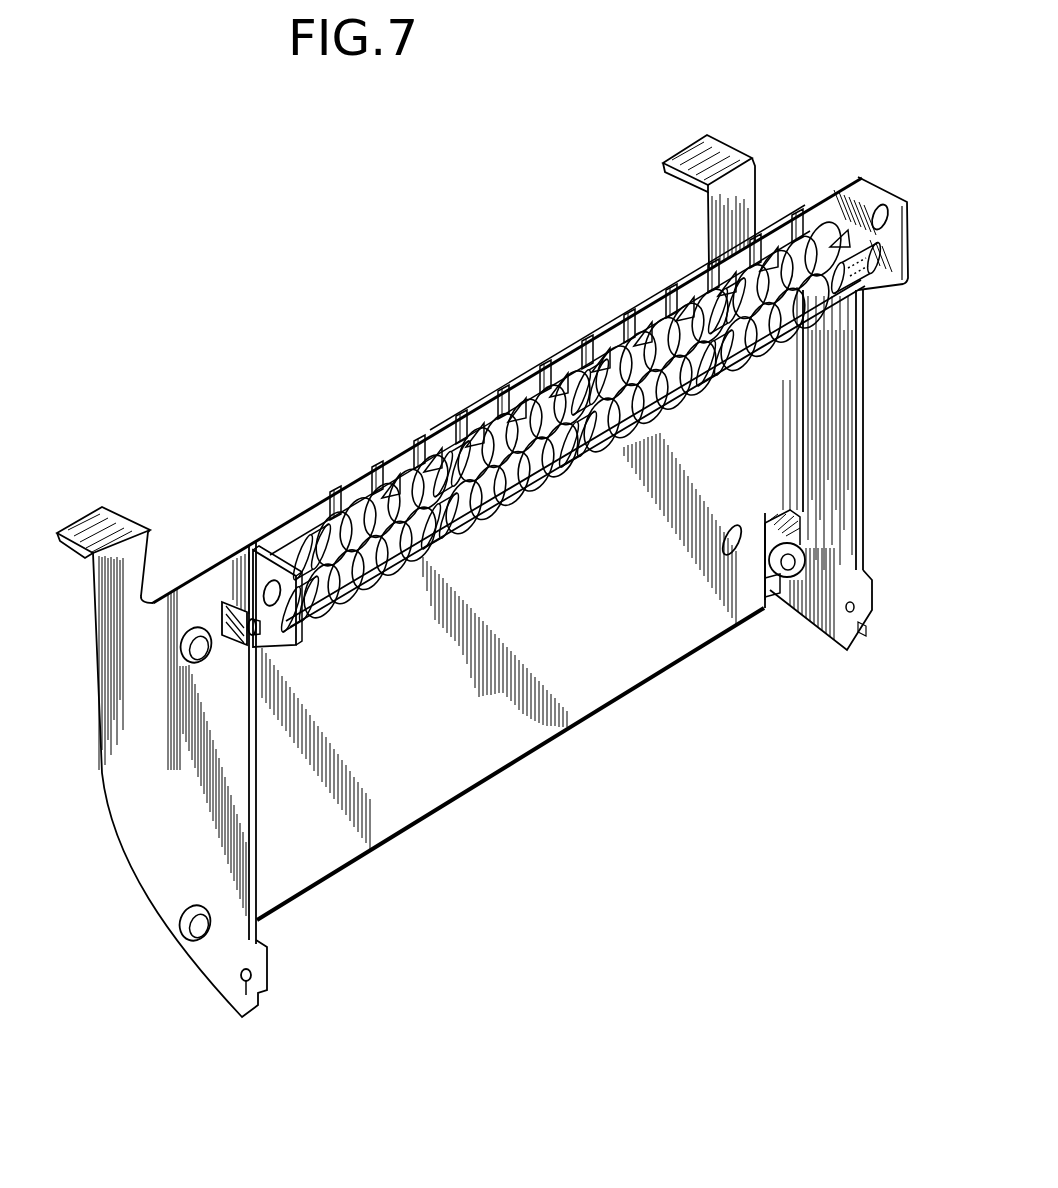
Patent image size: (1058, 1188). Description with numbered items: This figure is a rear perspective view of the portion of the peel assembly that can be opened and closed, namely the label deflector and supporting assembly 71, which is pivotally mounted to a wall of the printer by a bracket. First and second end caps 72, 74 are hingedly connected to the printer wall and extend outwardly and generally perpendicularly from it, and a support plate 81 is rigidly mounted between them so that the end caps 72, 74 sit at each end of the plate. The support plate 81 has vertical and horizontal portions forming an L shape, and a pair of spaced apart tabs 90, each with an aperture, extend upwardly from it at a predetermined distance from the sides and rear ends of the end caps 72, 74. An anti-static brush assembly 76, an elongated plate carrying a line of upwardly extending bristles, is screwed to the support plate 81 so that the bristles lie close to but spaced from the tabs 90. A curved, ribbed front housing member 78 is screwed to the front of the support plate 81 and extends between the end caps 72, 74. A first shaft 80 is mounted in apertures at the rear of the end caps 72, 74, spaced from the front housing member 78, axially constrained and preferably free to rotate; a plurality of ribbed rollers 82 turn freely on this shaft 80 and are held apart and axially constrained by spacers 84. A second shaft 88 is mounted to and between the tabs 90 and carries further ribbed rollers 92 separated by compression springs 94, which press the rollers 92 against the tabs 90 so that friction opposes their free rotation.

The label deflector and supporting assembly 71 is at (878, 449).
The first end cap 72 is at (867, 387).
The second end cap 74 is at (106, 804).
The anti-static brush assembly 76 is at (772, 230).
The front housing member 78 is at (257, 547).
The first shaft 80 is at (258, 630).
The support plate 81 is at (453, 798).
The ribbed rollers 82 is at (845, 325).
The spacers 84 is at (730, 378).
The second shaft 88 is at (267, 530).
The tabs 90 is at (697, 275).
The ribbed rollers 92 is at (633, 315).
The compression springs 94 is at (577, 350).